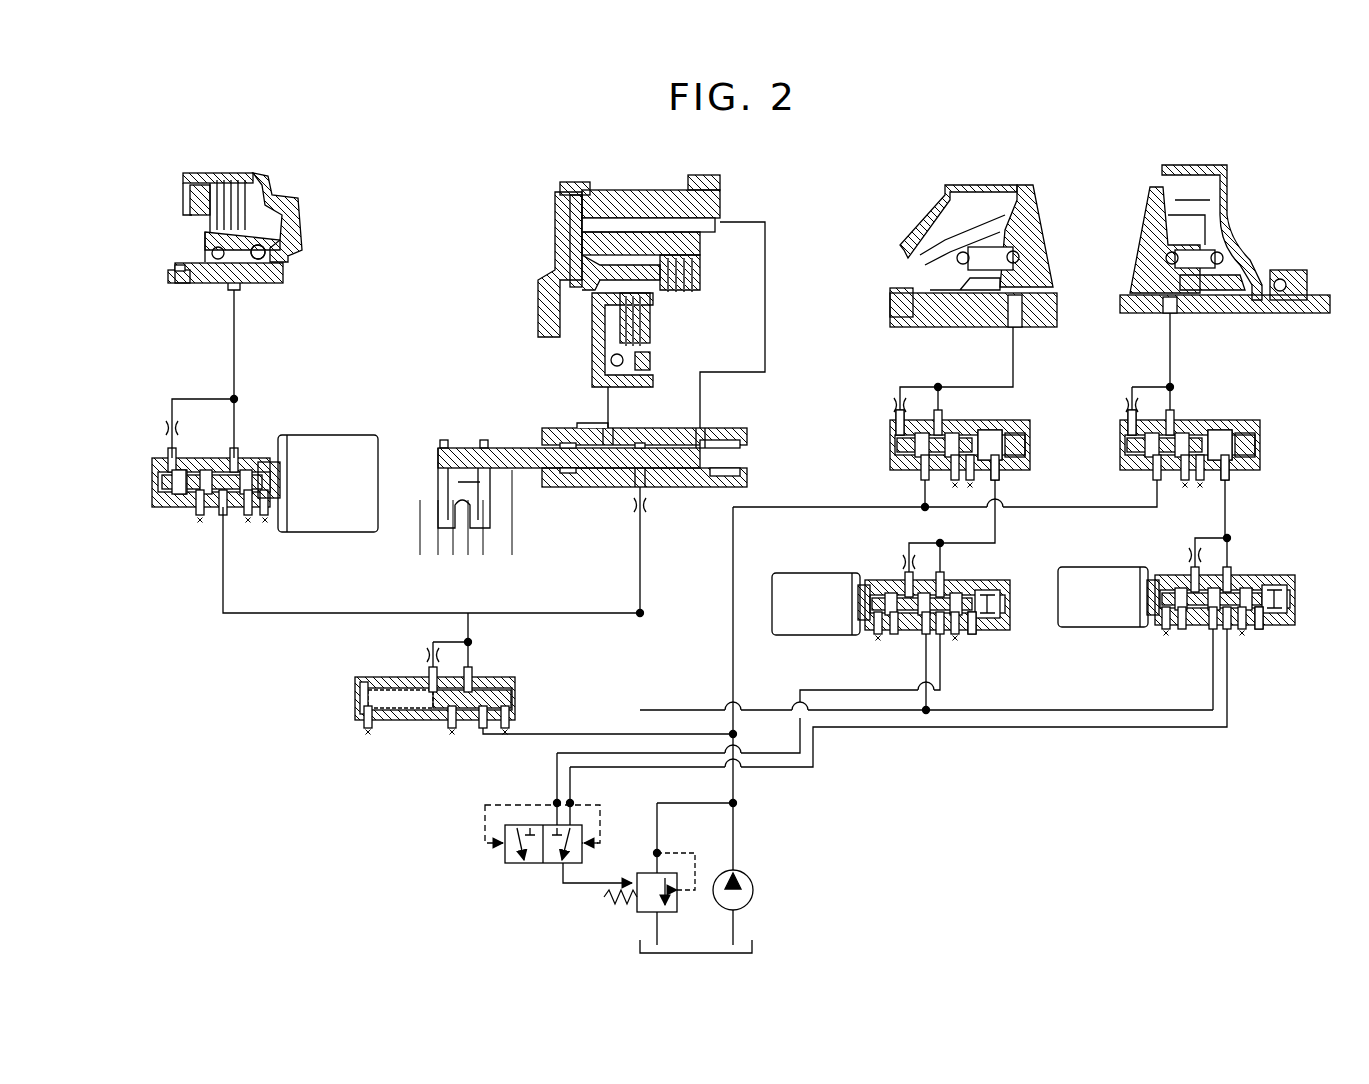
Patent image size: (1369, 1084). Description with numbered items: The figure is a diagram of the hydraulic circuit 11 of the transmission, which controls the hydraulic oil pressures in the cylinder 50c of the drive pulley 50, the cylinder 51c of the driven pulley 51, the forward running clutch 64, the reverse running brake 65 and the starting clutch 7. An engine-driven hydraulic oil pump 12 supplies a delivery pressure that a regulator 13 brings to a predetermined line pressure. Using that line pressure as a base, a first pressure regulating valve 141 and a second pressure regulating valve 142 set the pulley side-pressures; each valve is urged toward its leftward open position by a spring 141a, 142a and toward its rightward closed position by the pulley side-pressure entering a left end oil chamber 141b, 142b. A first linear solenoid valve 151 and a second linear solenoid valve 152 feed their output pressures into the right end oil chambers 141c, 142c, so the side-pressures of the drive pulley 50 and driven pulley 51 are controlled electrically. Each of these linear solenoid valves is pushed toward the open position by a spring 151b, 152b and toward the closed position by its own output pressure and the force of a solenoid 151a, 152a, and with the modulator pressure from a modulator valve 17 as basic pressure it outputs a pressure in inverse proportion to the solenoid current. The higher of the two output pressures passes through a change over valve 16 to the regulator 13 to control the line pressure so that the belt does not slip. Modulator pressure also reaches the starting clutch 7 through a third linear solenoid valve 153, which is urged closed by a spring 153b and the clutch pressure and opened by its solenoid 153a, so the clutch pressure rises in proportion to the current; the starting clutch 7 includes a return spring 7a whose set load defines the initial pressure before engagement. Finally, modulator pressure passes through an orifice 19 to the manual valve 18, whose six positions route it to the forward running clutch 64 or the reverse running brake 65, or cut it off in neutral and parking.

The starting clutch 7 is at (300, 197).
The return spring 7a is at (256, 262).
The hydraulic circuit 11 is at (395, 775).
The hydraulic oil pump 12 is at (755, 890).
The regulator 13 is at (643, 915).
The change over valve 16 is at (513, 865).
The modulator valve 17 is at (522, 667).
The manual valve 18 is at (560, 425).
The orifice 19 is at (633, 510).
The drive pulley 50 is at (1230, 200).
The cylinder 50c is at (1180, 232).
The driven pulley 51 is at (1040, 198).
The cylinder 51c is at (1007, 232).
The forward running clutch 64 is at (655, 343).
The reverse running brake 65 is at (708, 250).
The first pressure regulating valve 141 is at (1115, 458).
The spring 141a is at (1230, 465).
The left end oil chamber 141b is at (1127, 432).
The right end oil chamber 141c is at (1222, 440).
The second pressure regulating valve 142 is at (885, 458).
The spring 142a is at (1000, 465).
The left end oil chamber 142b is at (895, 432).
The right end oil chamber 142c is at (992, 440).
The first linear solenoid valve 151 is at (1265, 570).
The solenoid 151a is at (1098, 622).
The spring 151b is at (1262, 623).
The second linear solenoid valve 152 is at (995, 578).
The solenoid 152a is at (820, 635).
The spring 152b is at (975, 628).
The third linear solenoid valve 153 is at (172, 508).
The solenoid 153a is at (312, 532).
The spring 153b is at (183, 500).